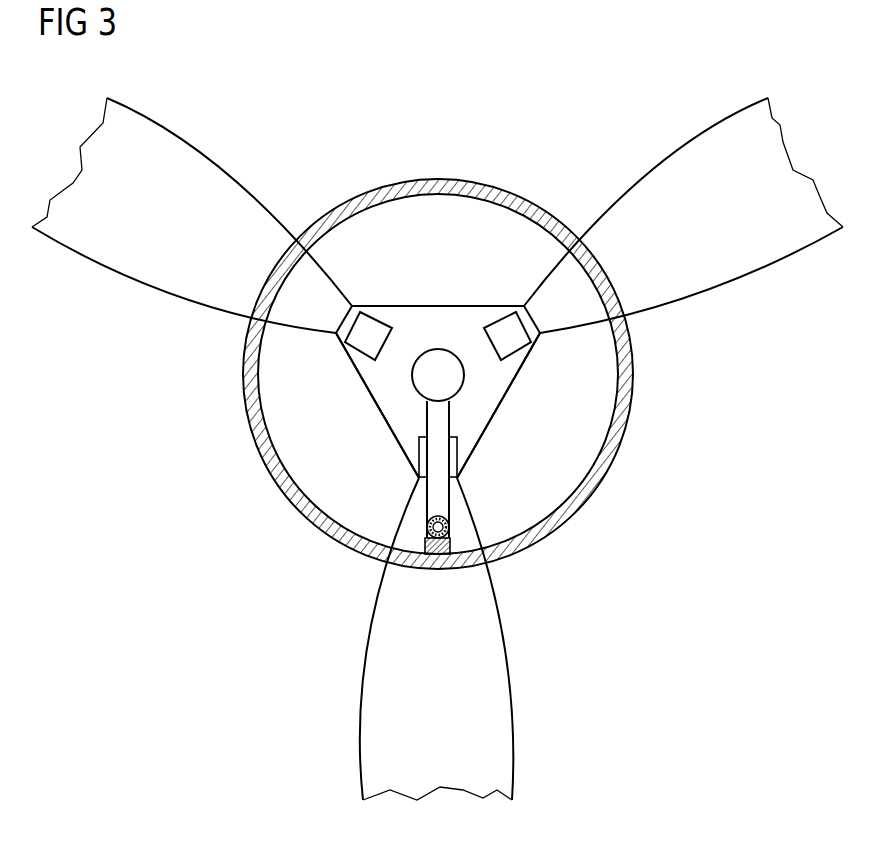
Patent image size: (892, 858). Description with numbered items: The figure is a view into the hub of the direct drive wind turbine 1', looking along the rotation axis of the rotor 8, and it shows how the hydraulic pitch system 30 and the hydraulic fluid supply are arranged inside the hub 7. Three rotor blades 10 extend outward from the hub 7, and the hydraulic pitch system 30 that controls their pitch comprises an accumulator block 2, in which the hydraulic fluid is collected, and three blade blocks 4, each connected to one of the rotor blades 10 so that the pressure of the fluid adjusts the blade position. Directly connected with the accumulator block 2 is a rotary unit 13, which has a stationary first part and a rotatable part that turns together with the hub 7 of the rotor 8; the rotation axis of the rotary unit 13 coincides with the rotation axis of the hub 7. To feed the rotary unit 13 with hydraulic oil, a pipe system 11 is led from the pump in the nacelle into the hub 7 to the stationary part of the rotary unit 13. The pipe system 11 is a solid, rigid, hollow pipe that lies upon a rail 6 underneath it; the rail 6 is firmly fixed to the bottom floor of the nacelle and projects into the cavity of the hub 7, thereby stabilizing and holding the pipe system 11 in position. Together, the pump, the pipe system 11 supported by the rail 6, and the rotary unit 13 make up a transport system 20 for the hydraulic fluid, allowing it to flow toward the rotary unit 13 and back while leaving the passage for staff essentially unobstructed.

The direct drive wind turbine 1' is at (512, 328).
The accumulator block 2 is at (487, 407).
The blade blocks 4 is at (370, 323).
The rail 6 is at (447, 547).
The hub 7 is at (617, 435).
The rotor 8 is at (727, 358).
The rotor blades 10 is at (196, 170).
The pipe system 11 is at (427, 423).
The rotary unit 13 is at (423, 379).
The transport system 20 is at (393, 481).
The hydraulic pitch system 30 is at (543, 376).